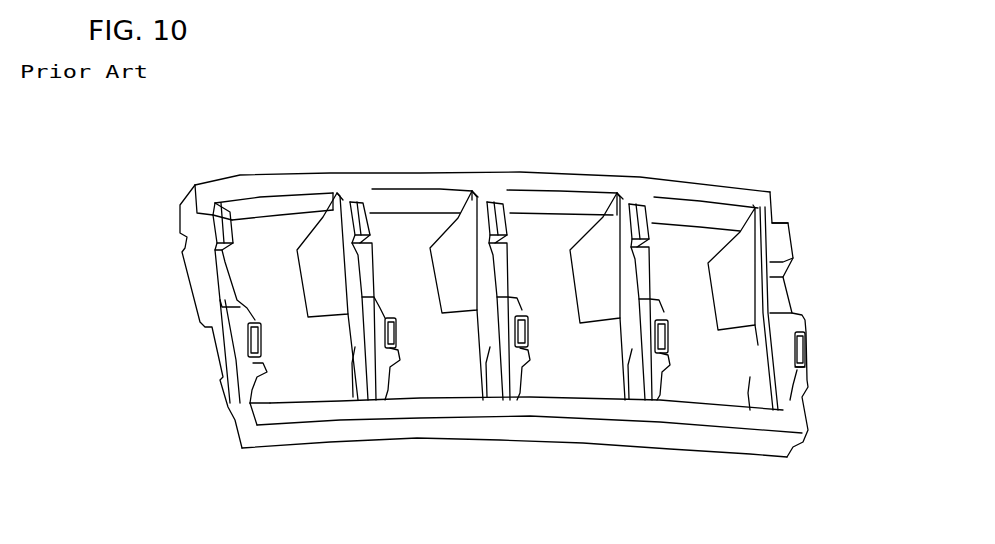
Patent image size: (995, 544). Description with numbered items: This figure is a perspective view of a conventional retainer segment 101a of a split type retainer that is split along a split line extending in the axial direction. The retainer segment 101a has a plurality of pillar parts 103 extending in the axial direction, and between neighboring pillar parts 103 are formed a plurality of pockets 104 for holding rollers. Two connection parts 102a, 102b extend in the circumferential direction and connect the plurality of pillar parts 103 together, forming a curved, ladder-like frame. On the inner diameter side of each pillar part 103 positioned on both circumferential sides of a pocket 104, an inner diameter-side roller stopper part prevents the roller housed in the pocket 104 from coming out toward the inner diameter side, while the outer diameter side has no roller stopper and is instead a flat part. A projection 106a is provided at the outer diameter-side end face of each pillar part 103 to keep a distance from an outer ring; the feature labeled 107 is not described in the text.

The retainer segment 101a is at (758, 119).
The connection part 102a is at (347, 190).
The connection part 102b is at (337, 408).
The pillar part 103 is at (320, 253).
The pocket 104 is at (267, 257).
The projection 106a is at (261, 333).
The rib 107 is at (215, 303).